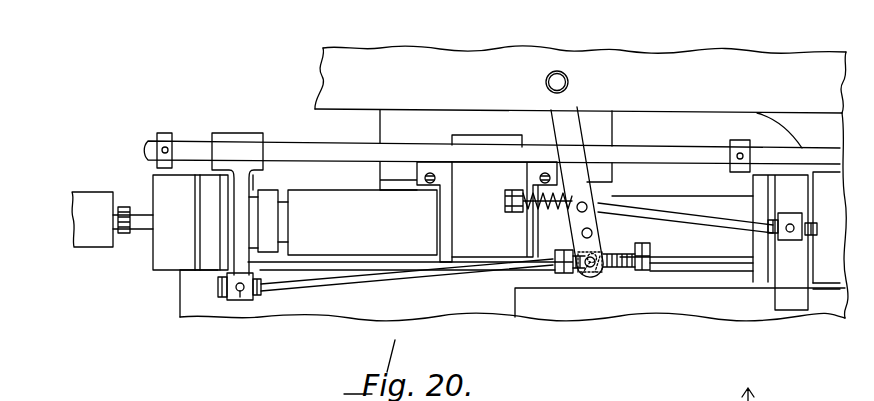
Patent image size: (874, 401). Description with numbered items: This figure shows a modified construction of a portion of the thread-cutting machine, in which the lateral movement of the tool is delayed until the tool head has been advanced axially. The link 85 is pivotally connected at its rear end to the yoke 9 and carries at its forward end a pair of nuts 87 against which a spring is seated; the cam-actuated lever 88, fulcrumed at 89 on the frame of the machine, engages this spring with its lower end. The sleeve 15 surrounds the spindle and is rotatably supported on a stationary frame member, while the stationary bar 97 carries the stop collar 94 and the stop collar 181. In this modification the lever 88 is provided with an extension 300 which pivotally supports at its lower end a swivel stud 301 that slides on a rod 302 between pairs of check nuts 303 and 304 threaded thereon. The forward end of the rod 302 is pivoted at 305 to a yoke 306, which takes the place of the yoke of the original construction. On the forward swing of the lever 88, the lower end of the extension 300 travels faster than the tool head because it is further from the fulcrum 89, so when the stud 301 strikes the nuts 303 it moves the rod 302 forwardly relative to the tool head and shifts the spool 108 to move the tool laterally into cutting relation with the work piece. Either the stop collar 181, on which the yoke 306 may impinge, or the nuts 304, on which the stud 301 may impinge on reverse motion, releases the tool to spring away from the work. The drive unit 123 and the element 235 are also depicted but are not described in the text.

The yoke 9 is at (790, 285).
The sleeve 15 is at (357, 196).
The link 85 is at (653, 211).
The nuts 87 is at (504, 201).
The lever 88 is at (560, 124).
The fulcrum 89 is at (546, 82).
The stop collar 94 is at (733, 140).
The stationary bar 97 is at (329, 148).
The spool 108 is at (250, 233).
The motor 123 is at (172, 250).
The stop collar 181 is at (165, 133).
The element 235 is at (670, 395).
The extension 300 is at (580, 230).
The swivel stud 301 is at (590, 276).
The rod 302 is at (423, 272).
The check nuts 303 is at (560, 275).
The check nuts 304 is at (648, 272).
The pivot 305 is at (240, 300).
The yoke 306 is at (235, 136).